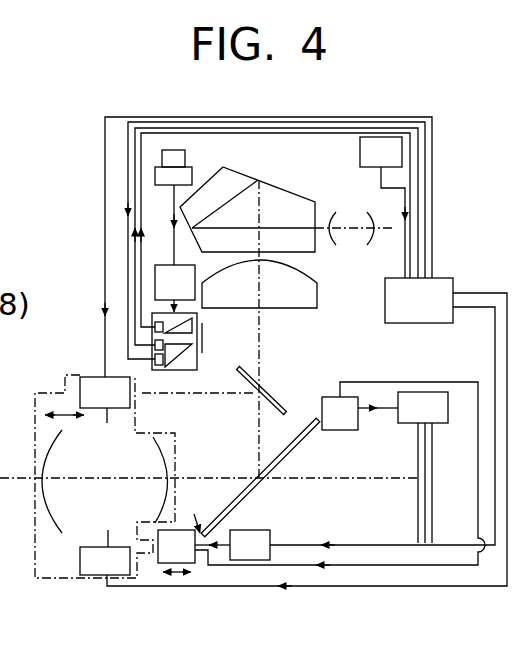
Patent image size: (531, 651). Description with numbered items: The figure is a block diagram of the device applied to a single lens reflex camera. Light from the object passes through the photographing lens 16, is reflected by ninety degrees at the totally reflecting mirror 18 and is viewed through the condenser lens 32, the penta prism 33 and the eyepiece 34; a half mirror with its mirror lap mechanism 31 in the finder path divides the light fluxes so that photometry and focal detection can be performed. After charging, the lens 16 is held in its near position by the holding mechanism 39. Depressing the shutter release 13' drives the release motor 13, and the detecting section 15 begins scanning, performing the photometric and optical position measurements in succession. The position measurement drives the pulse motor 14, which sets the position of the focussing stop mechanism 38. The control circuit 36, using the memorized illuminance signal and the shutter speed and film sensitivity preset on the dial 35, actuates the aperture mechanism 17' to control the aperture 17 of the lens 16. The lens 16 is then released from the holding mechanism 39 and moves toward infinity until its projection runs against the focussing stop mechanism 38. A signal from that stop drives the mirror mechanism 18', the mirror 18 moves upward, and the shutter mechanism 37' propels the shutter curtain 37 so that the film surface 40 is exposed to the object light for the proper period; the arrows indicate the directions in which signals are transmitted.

The shutter release 13' is at (190, 204).
The penta prism 33 is at (247, 208).
The eyepiece 34 is at (351, 216).
The dial for setting shutter speed and film sensitivity 35 is at (382, 207).
The control circuit 36 is at (419, 300).
The condenser lens 32 is at (259, 284).
The release motor 13 is at (175, 288).
The detecting section 15 is at (191, 371).
The holding mechanism 39 is at (105, 400).
The photographing lens 16 is at (116, 498).
The mirror lap mechanism 31 is at (274, 391).
The mirror mechanism 18' is at (360, 413).
The shutter mechanism 37' is at (423, 407).
The totally reflecting mirror 18 is at (262, 477).
The shutter curtain 37 is at (388, 483).
The film surface 40 is at (444, 483).
The focussing stop mechanism 38 is at (176, 546).
The pulse motor 14 is at (232, 545).
The aperture mechanism 17' is at (105, 561).
The aperture 17 is at (118, 534).